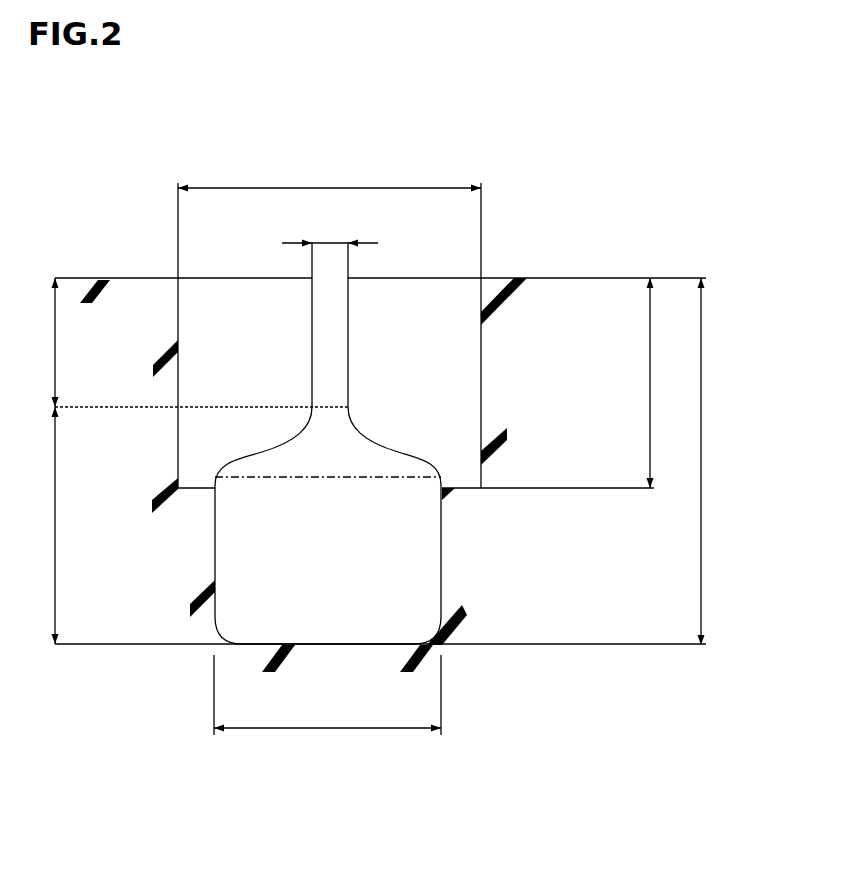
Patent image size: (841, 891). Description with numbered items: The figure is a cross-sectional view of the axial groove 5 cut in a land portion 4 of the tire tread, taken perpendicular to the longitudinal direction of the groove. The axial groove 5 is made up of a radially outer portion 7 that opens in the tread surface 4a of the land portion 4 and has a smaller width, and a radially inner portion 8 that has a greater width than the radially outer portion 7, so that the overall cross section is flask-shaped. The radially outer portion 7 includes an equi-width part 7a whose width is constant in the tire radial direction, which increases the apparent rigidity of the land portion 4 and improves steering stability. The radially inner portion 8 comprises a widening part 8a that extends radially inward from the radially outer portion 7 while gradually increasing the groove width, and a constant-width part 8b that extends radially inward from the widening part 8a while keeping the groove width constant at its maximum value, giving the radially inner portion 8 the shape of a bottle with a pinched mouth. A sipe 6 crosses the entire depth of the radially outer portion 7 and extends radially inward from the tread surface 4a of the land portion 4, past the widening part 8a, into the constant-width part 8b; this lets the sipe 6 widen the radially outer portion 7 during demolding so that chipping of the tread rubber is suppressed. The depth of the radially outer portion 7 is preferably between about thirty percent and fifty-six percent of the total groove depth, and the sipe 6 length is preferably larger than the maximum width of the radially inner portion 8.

The land portion 4 is at (403, 356).
The tread surface 4a is at (555, 278).
The axial groove 5 is at (203, 568).
The sipe 6 is at (460, 469).
The radially outer portion 7 is at (460, 325).
The equi-width part 7a is at (335, 356).
The radially inner portion 8 is at (382, 526).
The widening part 8a is at (330, 460).
The constant-width part 8b is at (338, 586).